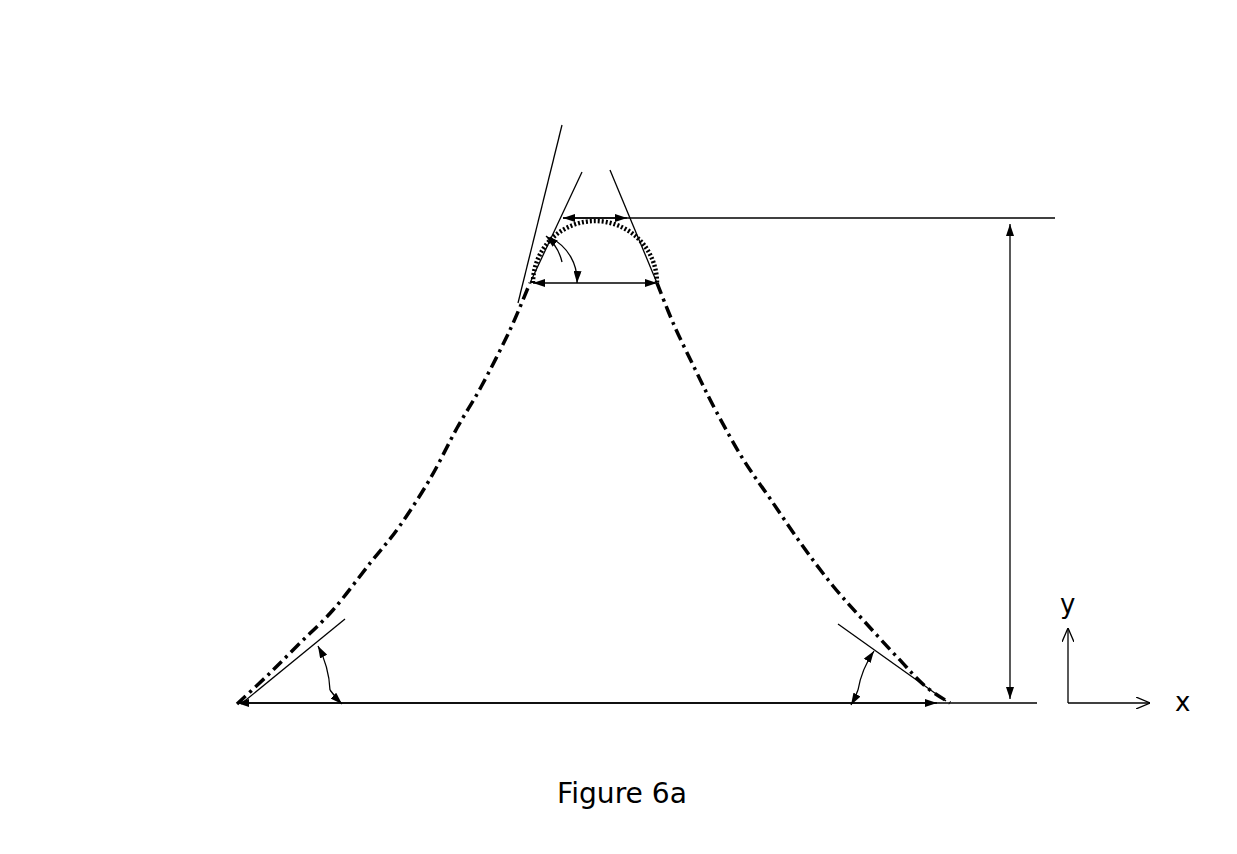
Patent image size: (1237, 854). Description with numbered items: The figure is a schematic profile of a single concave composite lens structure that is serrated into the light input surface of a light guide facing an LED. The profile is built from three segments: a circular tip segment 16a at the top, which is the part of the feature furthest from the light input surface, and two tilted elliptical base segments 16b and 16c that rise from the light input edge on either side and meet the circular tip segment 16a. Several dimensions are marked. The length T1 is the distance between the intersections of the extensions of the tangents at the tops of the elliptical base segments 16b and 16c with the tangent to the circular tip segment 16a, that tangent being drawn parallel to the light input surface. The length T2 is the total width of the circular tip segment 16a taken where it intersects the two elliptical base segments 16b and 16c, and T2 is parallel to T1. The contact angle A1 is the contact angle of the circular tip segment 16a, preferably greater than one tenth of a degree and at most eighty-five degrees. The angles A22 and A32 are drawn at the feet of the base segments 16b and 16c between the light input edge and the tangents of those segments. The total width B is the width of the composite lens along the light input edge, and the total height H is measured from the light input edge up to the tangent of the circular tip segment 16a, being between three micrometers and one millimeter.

The circular tip segment 16a is at (645, 240).
The tilted elliptical base segment 16b is at (453, 425).
The tilted elliptical base segment 16c is at (715, 408).
The length T1 is at (593, 217).
The length T2 is at (595, 289).
The contact angle A1 is at (560, 263).
The base angle A22 is at (337, 665).
The base angle A32 is at (853, 674).
The total width B is at (588, 701).
The total height H is at (1016, 438).